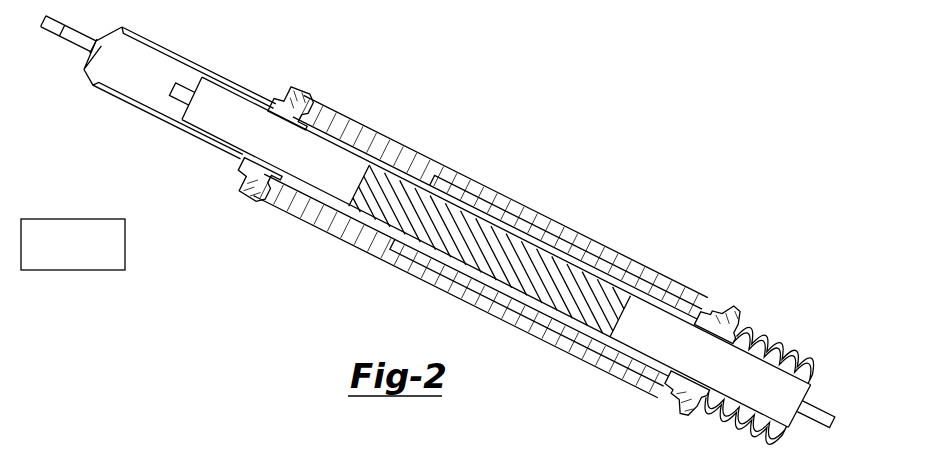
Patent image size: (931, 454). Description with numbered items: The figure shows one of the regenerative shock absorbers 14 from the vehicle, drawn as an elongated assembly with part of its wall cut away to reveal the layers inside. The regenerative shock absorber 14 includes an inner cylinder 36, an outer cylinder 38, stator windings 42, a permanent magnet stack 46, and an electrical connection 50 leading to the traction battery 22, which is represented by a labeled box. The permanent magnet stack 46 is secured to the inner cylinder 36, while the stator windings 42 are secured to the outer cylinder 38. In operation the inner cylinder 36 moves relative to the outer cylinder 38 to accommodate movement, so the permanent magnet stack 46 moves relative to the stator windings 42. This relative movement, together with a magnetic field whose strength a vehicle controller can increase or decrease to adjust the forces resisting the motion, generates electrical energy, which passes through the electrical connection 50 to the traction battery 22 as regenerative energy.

The regenerative shock absorber 14 is at (507, 57).
The traction battery 22 is at (295, 182).
The inner cylinder 36 is at (326, 165).
The outer cylinder 38 is at (430, 158).
The stator windings 42 is at (486, 205).
The permanent magnet stack 46 is at (526, 262).
The electrical connection 50 is at (238, 222).